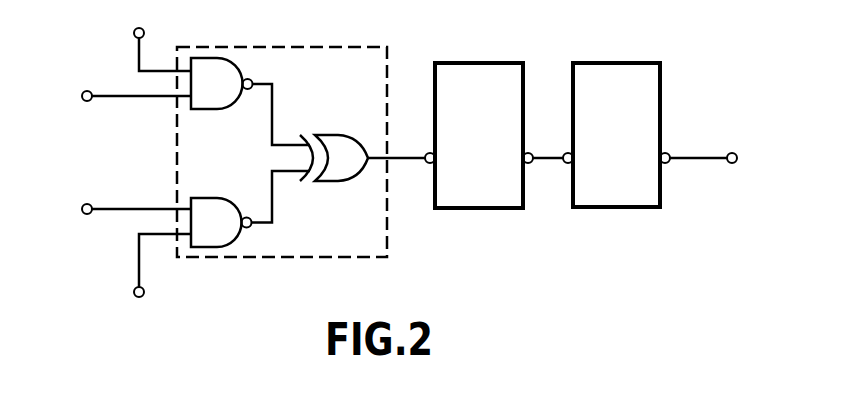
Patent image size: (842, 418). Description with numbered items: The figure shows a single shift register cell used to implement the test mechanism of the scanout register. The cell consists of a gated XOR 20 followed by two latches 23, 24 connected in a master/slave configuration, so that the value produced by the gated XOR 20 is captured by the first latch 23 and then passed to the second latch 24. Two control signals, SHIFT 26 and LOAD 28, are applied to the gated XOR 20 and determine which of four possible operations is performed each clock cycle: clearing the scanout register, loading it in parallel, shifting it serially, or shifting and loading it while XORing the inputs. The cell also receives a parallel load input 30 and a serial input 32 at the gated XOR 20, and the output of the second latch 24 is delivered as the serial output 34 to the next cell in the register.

The gated XOR 20 is at (306, 46).
The PH1 latch 23 is at (460, 63).
The latch 24 is at (600, 63).
The SHIFT control signal 26 is at (139, 256).
The LOAD control signal 28 is at (139, 54).
The LIN input line 30 is at (104, 97).
The SIN input line 32 is at (103, 209).
The SOUT output line 34 is at (703, 158).